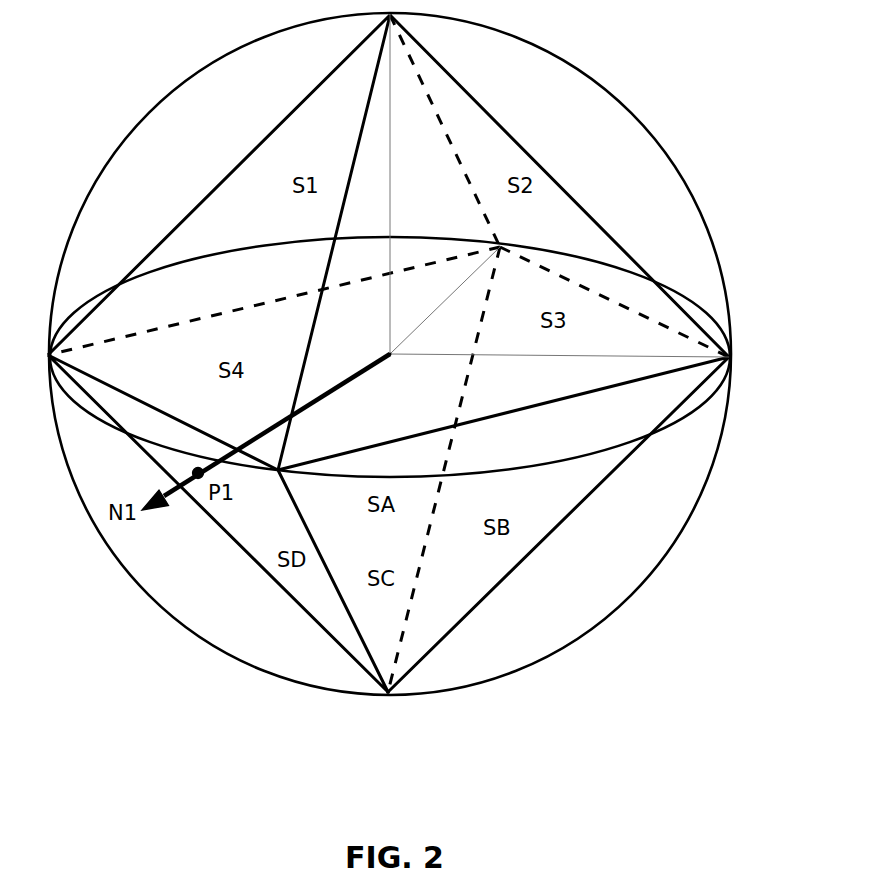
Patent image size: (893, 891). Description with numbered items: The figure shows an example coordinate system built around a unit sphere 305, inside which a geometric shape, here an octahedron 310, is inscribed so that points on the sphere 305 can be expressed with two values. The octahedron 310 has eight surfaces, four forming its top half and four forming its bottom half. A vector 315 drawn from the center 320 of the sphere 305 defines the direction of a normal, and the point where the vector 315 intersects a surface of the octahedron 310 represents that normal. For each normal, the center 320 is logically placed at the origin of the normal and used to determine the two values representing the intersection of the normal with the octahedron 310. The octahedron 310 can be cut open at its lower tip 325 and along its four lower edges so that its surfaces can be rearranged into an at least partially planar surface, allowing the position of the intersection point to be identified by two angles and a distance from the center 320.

The unit sphere 305 is at (667, 153).
The octahedron 310 is at (537, 157).
The vector 315 is at (274, 426).
The center 320 is at (390, 356).
The lower tip 325 is at (388, 692).